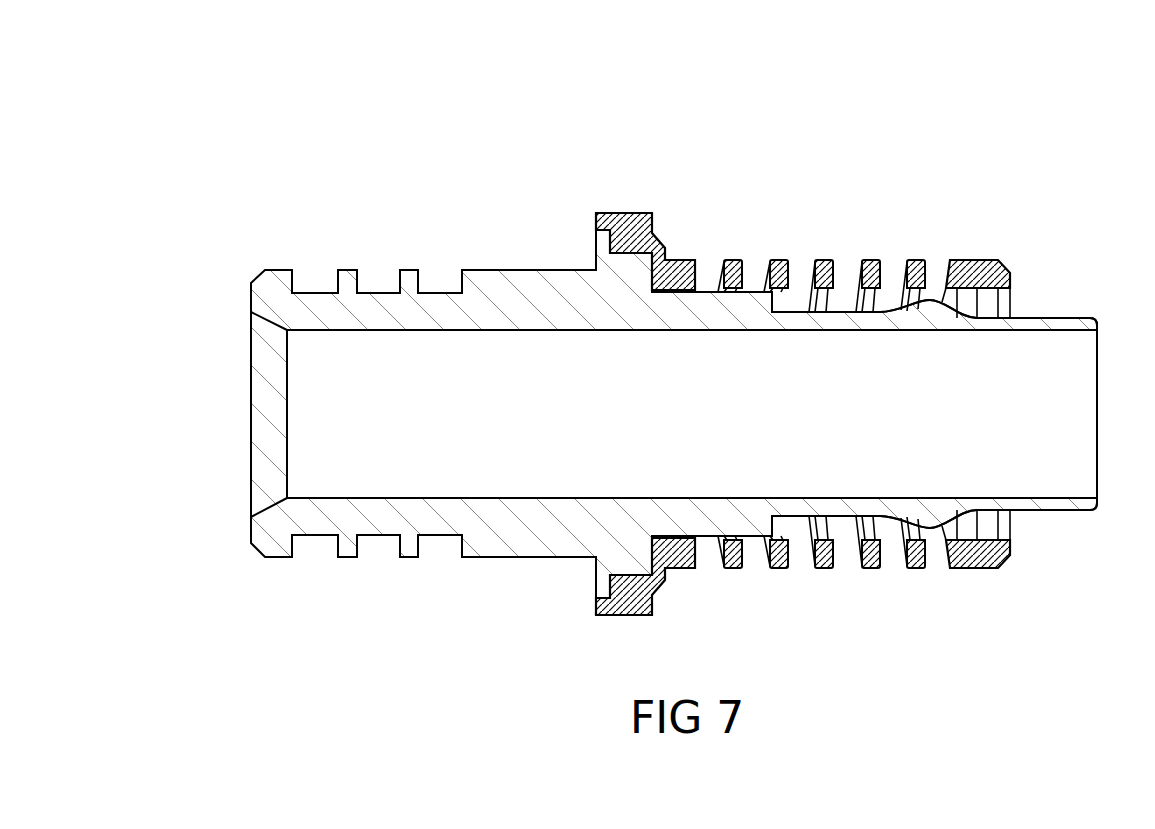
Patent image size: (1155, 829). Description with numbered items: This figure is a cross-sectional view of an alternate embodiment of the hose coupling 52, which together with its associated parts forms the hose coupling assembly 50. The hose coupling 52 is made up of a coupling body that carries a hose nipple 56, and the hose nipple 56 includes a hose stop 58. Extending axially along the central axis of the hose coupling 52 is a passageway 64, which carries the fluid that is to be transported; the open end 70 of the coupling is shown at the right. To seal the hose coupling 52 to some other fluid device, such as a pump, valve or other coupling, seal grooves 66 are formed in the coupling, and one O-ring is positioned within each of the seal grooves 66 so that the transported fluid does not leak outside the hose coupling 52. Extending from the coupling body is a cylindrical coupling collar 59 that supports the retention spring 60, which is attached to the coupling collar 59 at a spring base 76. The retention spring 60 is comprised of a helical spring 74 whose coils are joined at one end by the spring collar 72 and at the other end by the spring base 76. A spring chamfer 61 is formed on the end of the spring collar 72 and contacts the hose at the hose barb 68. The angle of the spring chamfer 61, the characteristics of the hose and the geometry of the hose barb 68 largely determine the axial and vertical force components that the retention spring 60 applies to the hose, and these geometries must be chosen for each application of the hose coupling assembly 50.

The hose coupling assembly 50 is at (763, 132).
The hose coupling 52 is at (498, 270).
The hose nipple 56 is at (692, 414).
The hose stop 58 is at (770, 300).
The coupling collar 59 is at (635, 268).
The retention spring 60 is at (823, 258).
The spring chamfer 61 is at (1010, 530).
The passageway 64 is at (325, 373).
The seal grooves 66 is at (440, 553).
The hose barb 68 is at (930, 318).
The outlet end 70 is at (1070, 318).
The spring collar 72 is at (991, 259).
The helical spring 74 is at (865, 570).
The spring base 76 is at (625, 598).